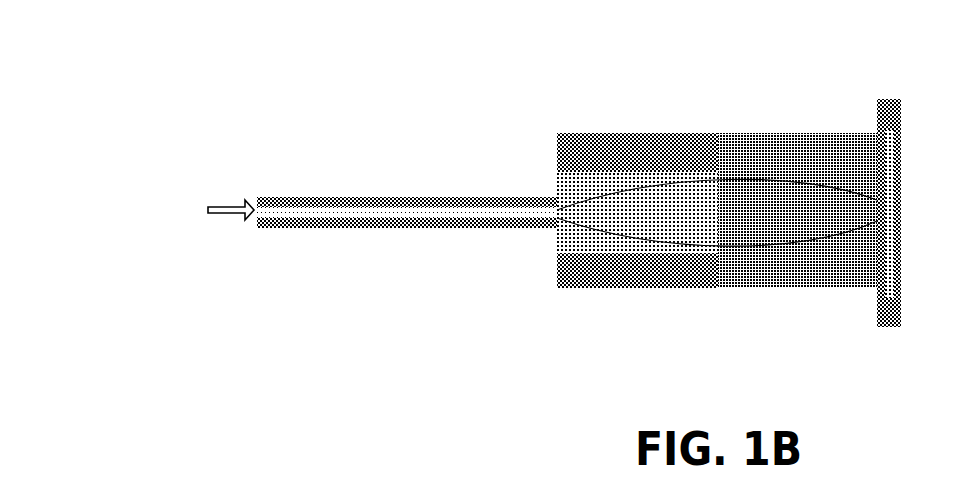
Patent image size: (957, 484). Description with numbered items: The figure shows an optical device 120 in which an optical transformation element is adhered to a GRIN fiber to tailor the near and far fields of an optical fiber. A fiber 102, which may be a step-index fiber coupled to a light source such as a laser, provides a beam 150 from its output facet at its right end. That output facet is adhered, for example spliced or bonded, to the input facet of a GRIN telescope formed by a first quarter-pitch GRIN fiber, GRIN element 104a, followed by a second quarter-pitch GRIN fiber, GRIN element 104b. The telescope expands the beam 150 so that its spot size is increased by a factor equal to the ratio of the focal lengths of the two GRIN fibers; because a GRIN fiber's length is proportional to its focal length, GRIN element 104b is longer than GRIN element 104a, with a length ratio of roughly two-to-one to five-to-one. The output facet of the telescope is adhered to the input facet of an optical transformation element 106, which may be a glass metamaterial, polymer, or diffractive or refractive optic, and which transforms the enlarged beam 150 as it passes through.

The optical device 120 is at (218, 34).
The beam 150 is at (240, 200).
The fiber 102 is at (414, 206).
The GRIN element 104a is at (655, 133).
The GRIN element 104b is at (800, 133).
The optical transformation element 106 is at (890, 100).